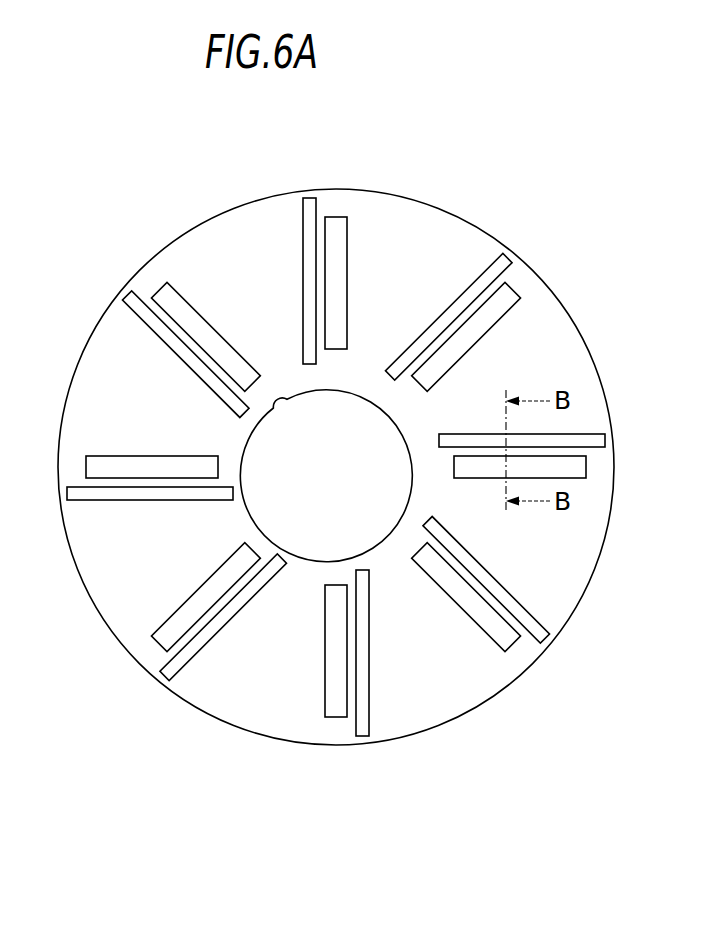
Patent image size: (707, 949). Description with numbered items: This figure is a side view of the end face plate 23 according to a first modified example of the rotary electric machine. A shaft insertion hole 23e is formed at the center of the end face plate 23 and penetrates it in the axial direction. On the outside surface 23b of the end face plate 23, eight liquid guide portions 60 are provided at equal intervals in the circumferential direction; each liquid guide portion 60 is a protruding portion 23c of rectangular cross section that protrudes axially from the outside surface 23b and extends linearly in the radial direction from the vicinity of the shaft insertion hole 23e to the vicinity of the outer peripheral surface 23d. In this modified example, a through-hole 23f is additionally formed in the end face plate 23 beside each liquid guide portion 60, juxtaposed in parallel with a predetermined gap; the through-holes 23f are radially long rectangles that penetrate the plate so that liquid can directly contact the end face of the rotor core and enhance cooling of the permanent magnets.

The end face plate 23 is at (449, 114).
The outside surface 23b is at (517, 317).
The protruding portion 23c is at (300, 260).
The liquid guide portion 60 is at (336, 467).
The outer peripheral surface 23d is at (472, 220).
The shaft insertion hole 23e is at (268, 403).
The through-hole 23f is at (115, 465).